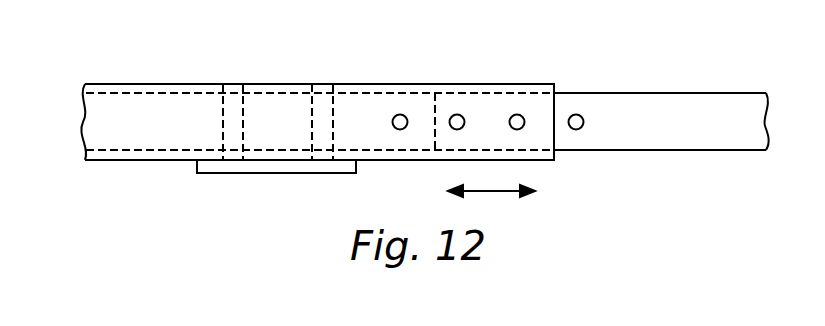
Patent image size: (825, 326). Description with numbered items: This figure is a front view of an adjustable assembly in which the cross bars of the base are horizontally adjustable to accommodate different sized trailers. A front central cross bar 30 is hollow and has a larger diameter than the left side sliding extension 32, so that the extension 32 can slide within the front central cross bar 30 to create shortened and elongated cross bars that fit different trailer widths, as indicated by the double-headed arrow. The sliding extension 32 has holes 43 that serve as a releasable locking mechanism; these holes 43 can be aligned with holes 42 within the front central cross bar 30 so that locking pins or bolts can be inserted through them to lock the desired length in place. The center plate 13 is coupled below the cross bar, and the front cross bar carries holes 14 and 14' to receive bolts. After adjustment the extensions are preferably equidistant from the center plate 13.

The center plate 13 is at (290, 173).
The hole 14 is at (259, 122).
The hole 14' is at (350, 122).
The front central cross bar 30 is at (285, 84).
The left side sliding extension 32 is at (687, 93).
The holes 42 is at (402, 114).
The holes 43 is at (580, 114).